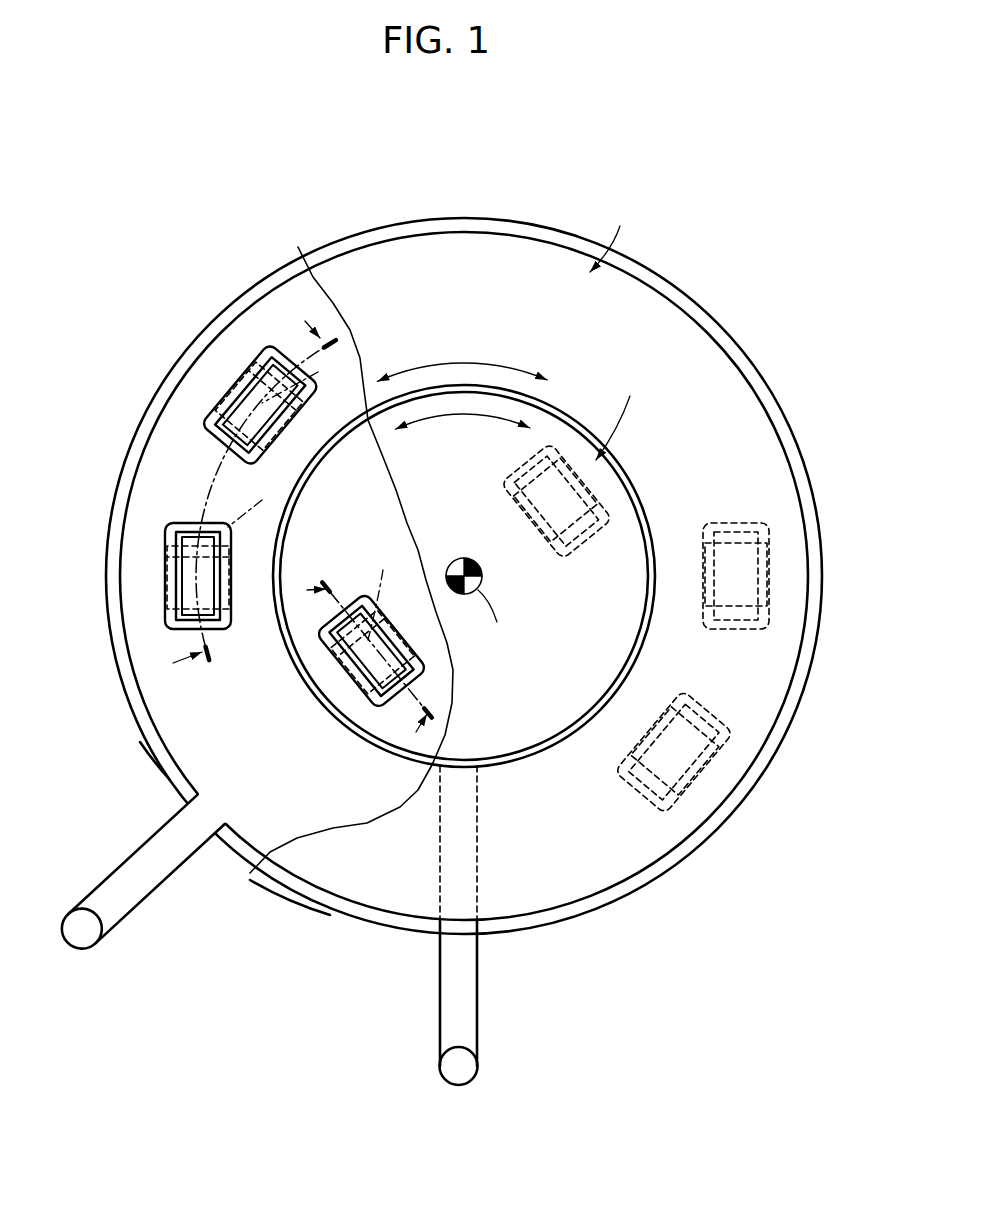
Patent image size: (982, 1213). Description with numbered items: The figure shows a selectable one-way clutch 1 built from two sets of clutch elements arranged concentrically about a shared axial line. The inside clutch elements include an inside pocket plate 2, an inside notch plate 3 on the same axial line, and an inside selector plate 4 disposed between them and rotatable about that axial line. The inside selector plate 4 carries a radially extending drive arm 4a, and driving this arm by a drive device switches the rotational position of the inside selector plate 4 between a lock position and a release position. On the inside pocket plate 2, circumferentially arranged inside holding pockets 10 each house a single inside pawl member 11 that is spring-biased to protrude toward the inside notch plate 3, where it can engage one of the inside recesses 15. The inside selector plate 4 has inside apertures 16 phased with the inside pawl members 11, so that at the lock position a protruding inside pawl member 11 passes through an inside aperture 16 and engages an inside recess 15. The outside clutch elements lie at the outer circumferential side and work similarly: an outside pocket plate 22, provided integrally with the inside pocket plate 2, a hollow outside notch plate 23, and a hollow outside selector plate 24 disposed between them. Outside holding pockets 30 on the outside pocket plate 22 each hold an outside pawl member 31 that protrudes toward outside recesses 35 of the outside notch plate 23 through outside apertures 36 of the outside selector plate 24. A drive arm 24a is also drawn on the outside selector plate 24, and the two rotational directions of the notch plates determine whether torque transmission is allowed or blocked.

The selectable one-way clutch 1 is at (570, 155).
The inside pocket plate 2 is at (322, 635).
The inside notch plate 3 is at (507, 735).
The inside selector plate 4 is at (347, 705).
The drive arm 4a is at (452, 997).
The inside holding pocket 10 is at (318, 629).
The inside pawl member 11 is at (395, 640).
The inside recess 15 is at (365, 705).
The inside aperture 16 is at (332, 665).
The outside pocket plate 22 is at (142, 437).
The outside notch plate 23 is at (307, 873).
The outside selector plate 24 is at (175, 738).
The support arm 24a is at (115, 895).
The outside holding pocket 30 is at (270, 355).
The outside pawl member 31 is at (257, 398).
The outside recess 35 is at (215, 403).
The outside aperture 36 is at (253, 367).